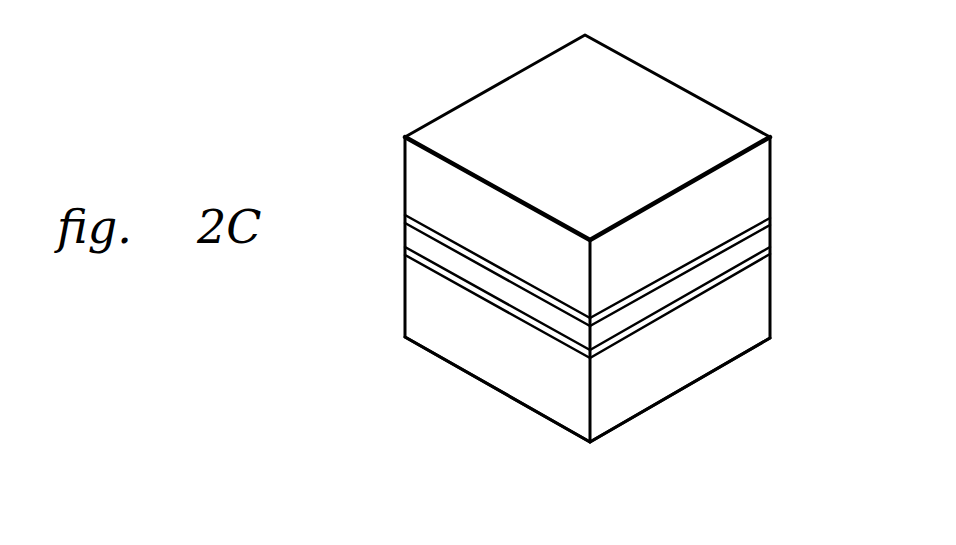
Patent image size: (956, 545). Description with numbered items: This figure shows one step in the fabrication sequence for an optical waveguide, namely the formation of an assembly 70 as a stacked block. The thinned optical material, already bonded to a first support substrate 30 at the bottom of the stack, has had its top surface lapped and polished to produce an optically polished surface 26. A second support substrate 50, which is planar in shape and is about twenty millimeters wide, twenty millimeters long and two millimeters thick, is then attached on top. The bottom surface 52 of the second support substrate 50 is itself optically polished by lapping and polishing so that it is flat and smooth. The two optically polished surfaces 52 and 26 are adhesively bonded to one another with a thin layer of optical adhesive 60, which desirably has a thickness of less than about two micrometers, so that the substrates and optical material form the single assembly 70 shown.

The optically polished surface 26 is at (430, 233).
The first support substrate 30 is at (677, 342).
The second support substrate 50 is at (627, 130).
The bottom surface 52 is at (750, 233).
The layer of optical adhesive 60 is at (513, 295).
The assembly 70 is at (579, 234).